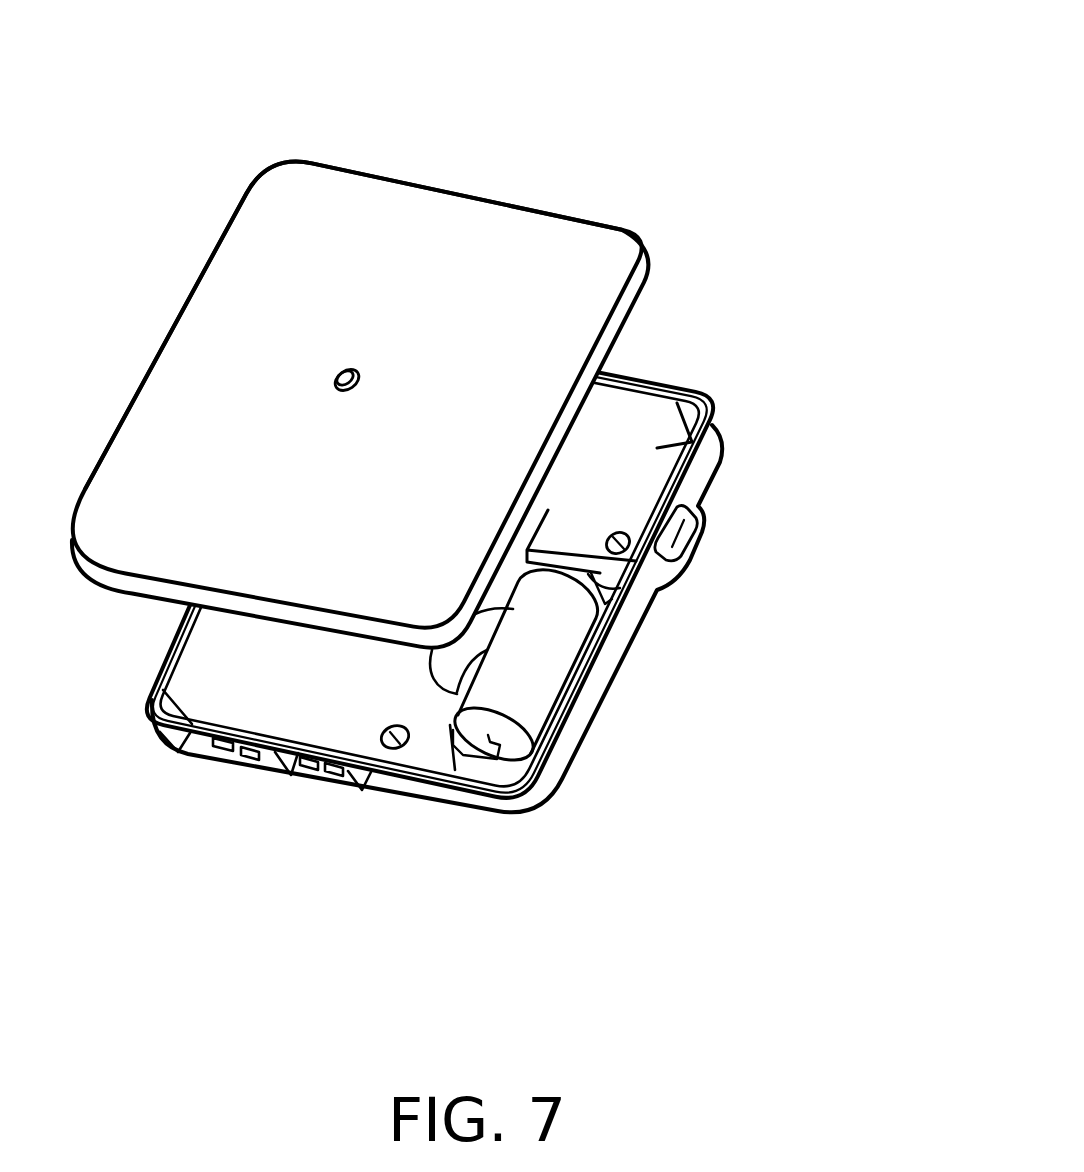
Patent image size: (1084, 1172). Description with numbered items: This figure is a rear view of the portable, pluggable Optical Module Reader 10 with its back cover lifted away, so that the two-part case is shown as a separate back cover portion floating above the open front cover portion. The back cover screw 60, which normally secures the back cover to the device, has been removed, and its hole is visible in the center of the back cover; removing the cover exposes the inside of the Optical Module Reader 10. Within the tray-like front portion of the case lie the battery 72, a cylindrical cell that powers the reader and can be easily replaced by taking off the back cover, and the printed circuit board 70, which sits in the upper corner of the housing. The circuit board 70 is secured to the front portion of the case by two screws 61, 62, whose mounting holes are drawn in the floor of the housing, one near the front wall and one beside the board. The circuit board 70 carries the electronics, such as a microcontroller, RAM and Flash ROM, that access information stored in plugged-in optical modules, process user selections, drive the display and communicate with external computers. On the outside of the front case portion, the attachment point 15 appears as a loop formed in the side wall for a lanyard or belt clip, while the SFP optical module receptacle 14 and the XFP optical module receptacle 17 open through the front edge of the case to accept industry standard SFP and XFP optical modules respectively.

The Optical Module Reader 10 is at (561, 44).
The back cover screw 60 is at (348, 372).
The printed circuit board 70 is at (692, 442).
The attachment point 15 is at (701, 546).
The screw 62 is at (648, 580).
The battery 72 is at (547, 675).
The screw 61 is at (401, 749).
The XFP optical module receptacle 17 is at (218, 769).
The SFP optical module receptacle 14 is at (317, 805).